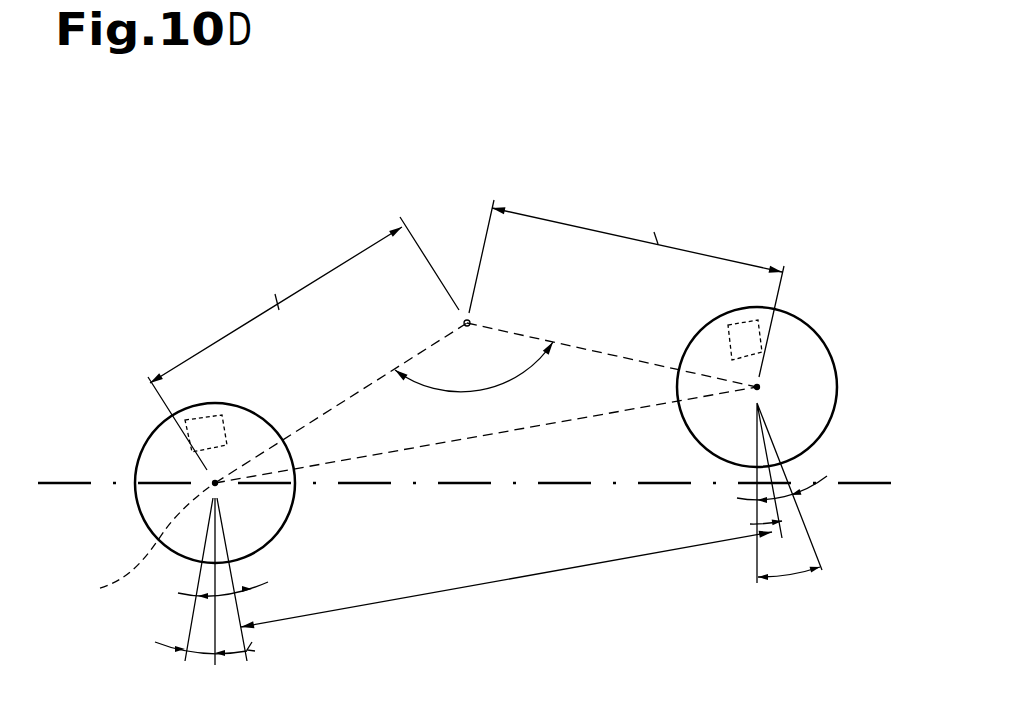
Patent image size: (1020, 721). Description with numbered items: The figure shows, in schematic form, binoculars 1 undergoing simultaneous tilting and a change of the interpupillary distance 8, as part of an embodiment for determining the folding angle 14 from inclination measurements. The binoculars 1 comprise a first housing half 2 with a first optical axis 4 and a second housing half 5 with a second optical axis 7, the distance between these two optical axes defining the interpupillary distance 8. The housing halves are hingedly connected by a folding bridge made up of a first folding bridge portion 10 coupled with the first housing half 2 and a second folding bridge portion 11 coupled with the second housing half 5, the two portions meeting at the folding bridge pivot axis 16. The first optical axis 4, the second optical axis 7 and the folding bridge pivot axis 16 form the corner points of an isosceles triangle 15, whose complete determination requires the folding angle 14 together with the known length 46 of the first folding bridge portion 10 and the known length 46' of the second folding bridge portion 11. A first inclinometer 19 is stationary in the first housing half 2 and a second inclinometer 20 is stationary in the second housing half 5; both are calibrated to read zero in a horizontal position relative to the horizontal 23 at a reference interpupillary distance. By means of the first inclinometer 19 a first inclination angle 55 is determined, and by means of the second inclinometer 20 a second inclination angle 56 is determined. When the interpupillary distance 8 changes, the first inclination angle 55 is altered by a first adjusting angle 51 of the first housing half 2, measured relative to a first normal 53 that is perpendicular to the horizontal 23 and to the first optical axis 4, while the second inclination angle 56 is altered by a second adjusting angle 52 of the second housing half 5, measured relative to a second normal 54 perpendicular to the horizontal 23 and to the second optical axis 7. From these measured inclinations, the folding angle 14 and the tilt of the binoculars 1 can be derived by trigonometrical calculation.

The binoculars 1 is at (800, 130).
The first housing half 2 is at (833, 300).
The first optical axis 4 is at (757, 387).
The second housing half 5 is at (148, 410).
The second optical axis 7 is at (148, 546).
The interpupillary distance 8 is at (530, 577).
The first folding bridge portion 10 is at (599, 283).
The second folding bridge portion 11 is at (340, 320).
The folding angle 14 is at (476, 382).
The isosceles triangle 15 is at (361, 397).
The folding bridge pivot axis 16 is at (466, 318).
The first inclinometer 19 is at (752, 337).
The second inclinometer 20 is at (200, 435).
The horizontal 23 is at (73, 480).
The length of the first folding bridge portion 46 is at (739, 217).
The length of the second folding bridge portion 46' is at (191, 289).
The first adjusting angle 51 is at (787, 492).
The second adjusting angle 52 is at (221, 592).
The first normal 53 is at (786, 513).
The second normal 54 is at (247, 650).
The first inclination angle 55 is at (786, 570).
The second inclination angle 56 is at (206, 663).